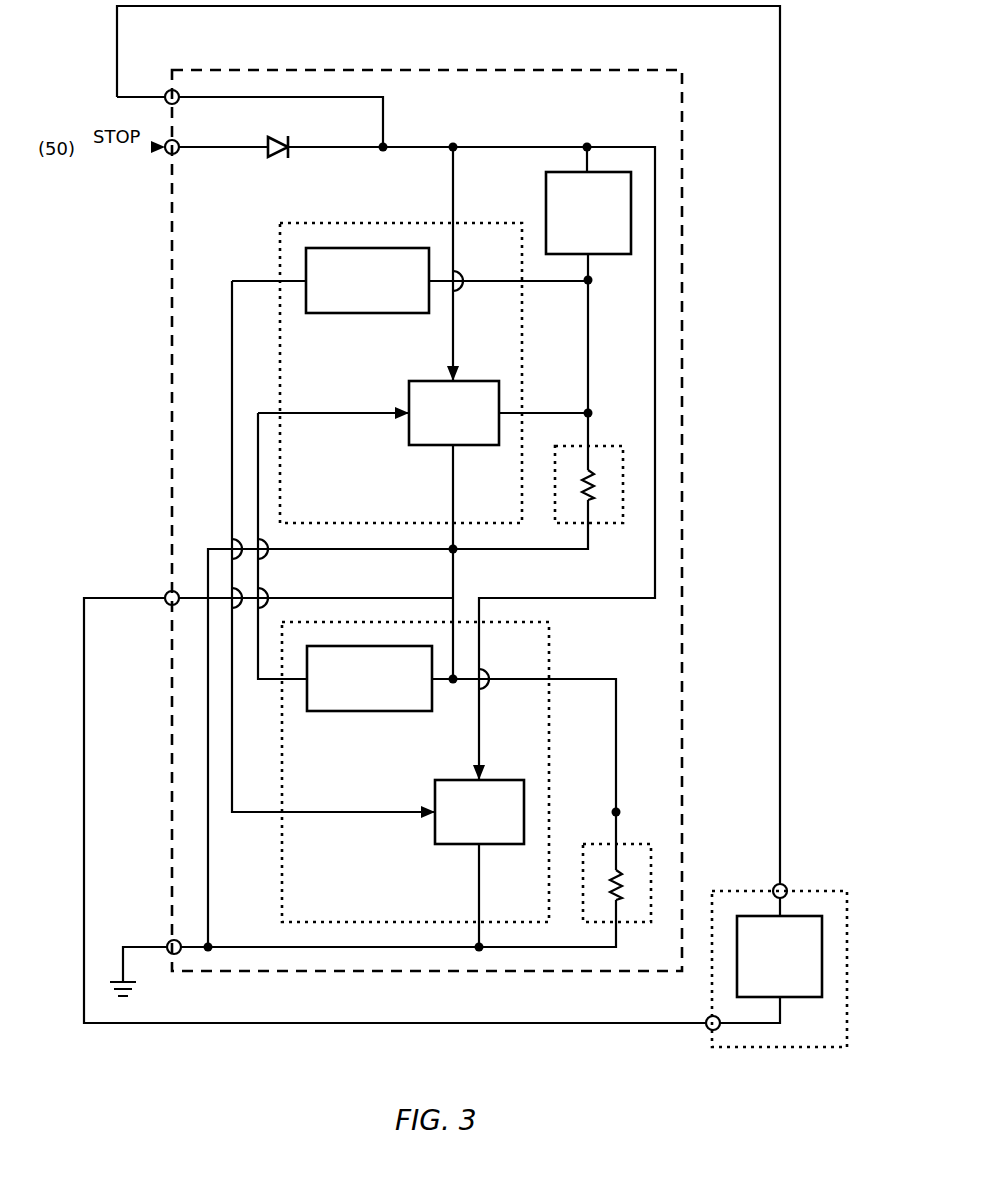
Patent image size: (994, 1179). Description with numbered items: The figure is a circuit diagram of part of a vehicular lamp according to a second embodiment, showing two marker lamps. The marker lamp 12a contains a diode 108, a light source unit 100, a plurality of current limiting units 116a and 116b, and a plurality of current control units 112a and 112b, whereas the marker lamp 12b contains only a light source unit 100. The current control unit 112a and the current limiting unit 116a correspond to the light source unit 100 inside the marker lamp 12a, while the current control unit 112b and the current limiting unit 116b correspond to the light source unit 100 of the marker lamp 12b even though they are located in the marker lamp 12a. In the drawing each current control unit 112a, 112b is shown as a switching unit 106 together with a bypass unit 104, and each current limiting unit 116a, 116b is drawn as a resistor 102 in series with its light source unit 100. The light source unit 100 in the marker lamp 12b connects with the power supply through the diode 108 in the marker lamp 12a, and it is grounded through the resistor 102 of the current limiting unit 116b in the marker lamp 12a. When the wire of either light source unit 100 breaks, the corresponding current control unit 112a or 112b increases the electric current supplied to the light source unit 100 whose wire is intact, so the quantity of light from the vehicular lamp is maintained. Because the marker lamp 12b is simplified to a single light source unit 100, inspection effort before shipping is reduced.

The marker lamp 12a is at (428, 70).
The marker lamp 12b is at (746, 891).
The light source unit 100 is at (611, 255).
The resistor 102 is at (592, 494).
The bypass unit 104 is at (478, 381).
The switching unit 106 is at (366, 313).
The diode 108 is at (290, 152).
The current control unit 112a is at (486, 223).
The current control unit 112b is at (549, 645).
The current limiting unit 116a is at (610, 446).
The current limiting unit 116b is at (638, 844).